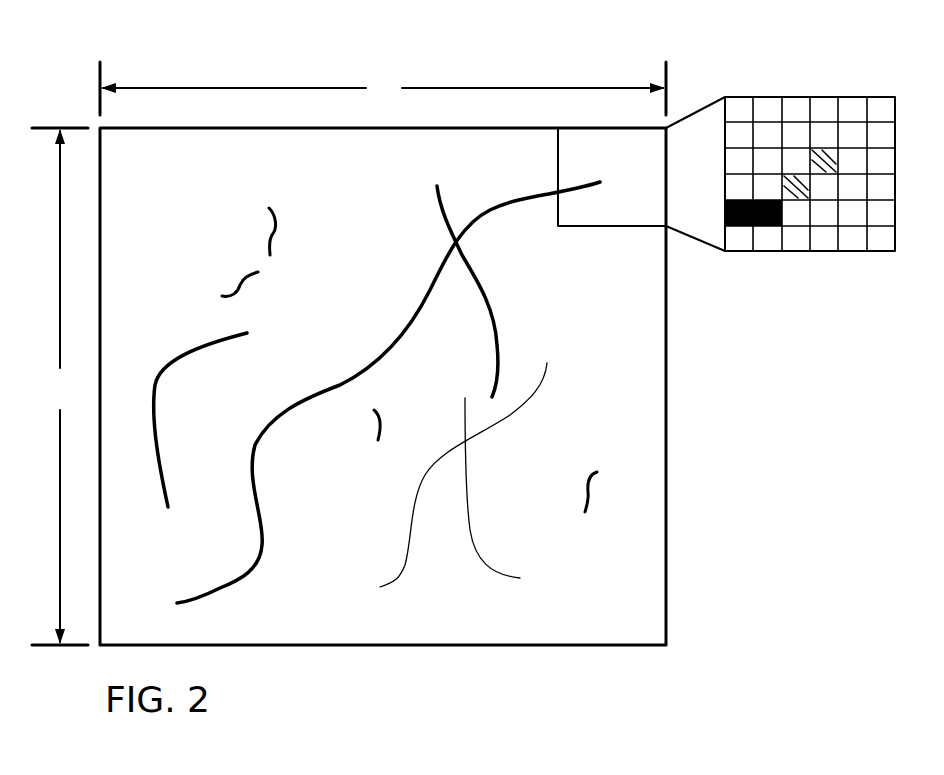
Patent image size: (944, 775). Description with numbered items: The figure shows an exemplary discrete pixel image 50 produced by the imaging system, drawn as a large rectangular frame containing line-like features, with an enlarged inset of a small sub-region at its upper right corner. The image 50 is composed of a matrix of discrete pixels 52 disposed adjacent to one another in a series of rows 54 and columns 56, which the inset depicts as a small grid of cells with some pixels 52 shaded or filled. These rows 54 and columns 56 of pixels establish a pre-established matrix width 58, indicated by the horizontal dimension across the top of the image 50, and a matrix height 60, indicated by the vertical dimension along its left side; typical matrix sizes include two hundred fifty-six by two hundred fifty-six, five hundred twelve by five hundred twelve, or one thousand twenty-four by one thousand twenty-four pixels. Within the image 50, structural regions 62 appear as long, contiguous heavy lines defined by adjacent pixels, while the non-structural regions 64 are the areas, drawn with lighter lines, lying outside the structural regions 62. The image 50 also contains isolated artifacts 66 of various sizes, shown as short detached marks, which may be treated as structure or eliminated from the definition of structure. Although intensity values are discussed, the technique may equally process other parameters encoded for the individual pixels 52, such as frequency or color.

The discrete pixel image 50 is at (694, 428).
The discrete pixels 52 is at (825, 218).
The rows 54 is at (725, 110).
The columns 56 is at (796, 96).
The matrix width 58 is at (383, 88).
The matrix height 60 is at (60, 386).
The structural regions 62 is at (380, 587).
The non-structural regions 64 is at (482, 617).
The isolated artifacts 66 is at (272, 232).